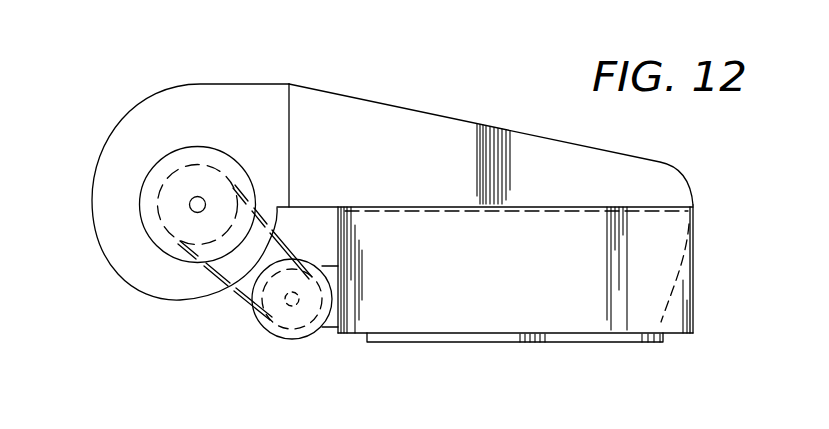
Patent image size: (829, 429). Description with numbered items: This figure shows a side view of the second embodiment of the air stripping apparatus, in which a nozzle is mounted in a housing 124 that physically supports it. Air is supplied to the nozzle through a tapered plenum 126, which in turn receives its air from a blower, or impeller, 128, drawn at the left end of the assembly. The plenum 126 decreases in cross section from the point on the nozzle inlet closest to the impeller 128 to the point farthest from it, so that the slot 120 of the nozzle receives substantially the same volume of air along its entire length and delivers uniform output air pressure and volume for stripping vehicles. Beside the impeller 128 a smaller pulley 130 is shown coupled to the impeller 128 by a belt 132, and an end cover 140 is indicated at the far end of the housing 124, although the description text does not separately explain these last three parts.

The slot 120 is at (397, 336).
The housing 124 is at (683, 295).
The tapered plenum 126 is at (405, 122).
The impeller 128 is at (128, 264).
The motor pulley 130 is at (309, 338).
The drive belt 132 is at (239, 297).
The end cover 140 is at (672, 222).